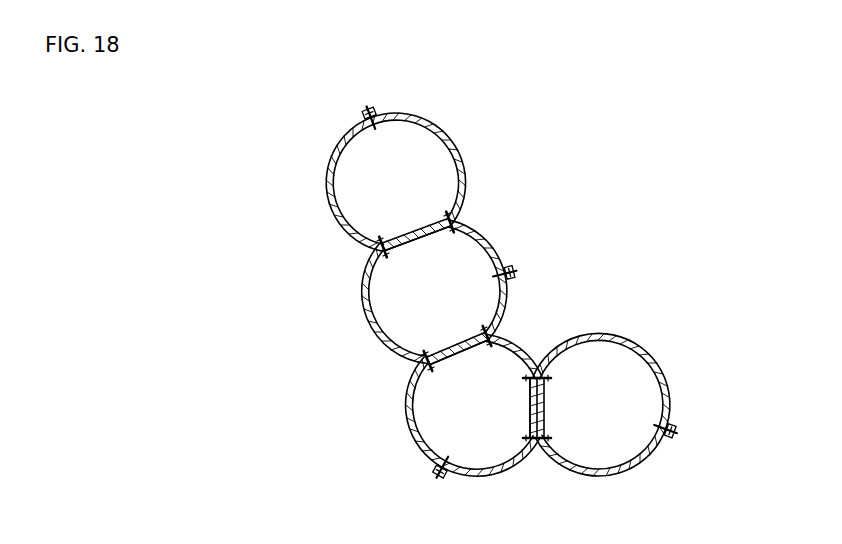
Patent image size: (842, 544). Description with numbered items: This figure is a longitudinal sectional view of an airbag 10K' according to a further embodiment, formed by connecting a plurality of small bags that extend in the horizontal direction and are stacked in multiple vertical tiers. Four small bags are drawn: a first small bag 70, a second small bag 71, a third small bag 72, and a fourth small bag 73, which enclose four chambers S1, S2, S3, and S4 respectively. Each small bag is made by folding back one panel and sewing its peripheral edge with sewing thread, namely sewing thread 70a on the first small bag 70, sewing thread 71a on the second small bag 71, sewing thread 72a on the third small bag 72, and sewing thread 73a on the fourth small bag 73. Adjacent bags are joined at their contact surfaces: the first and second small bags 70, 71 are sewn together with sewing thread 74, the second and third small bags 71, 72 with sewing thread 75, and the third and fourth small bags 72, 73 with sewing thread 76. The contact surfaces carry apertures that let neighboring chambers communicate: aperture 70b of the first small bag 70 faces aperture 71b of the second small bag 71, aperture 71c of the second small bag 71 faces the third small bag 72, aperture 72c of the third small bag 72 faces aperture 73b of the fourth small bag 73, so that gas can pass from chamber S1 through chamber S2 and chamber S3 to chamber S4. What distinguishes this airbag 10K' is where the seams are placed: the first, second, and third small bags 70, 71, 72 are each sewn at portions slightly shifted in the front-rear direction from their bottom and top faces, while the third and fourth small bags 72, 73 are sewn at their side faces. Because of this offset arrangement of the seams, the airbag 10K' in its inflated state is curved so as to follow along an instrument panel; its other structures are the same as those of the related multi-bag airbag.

The airbag 10K' is at (407, 300).
The first small bag 70 is at (328, 205).
The sewing thread 70a is at (378, 114).
The aperture 70b is at (414, 229).
The second small bag 71 is at (369, 330).
The sewing thread 71a is at (512, 289).
The aperture 71b is at (417, 250).
The aperture 71c is at (453, 342).
The third small bag 72 is at (414, 437).
The sewing thread 72a is at (449, 482).
The aperture 72c is at (468, 353).
The fourth small bag 73 is at (598, 473).
The sewing thread 73a is at (665, 444).
The aperture 73b is at (549, 409).
The sewing thread 74 is at (378, 240).
The sewing thread 75 is at (424, 354).
The sewing thread 76 is at (546, 378).
The chamber S1 is at (357, 165).
The chamber S2 is at (387, 293).
The chamber S3 is at (438, 406).
The chamber S4 is at (570, 462).